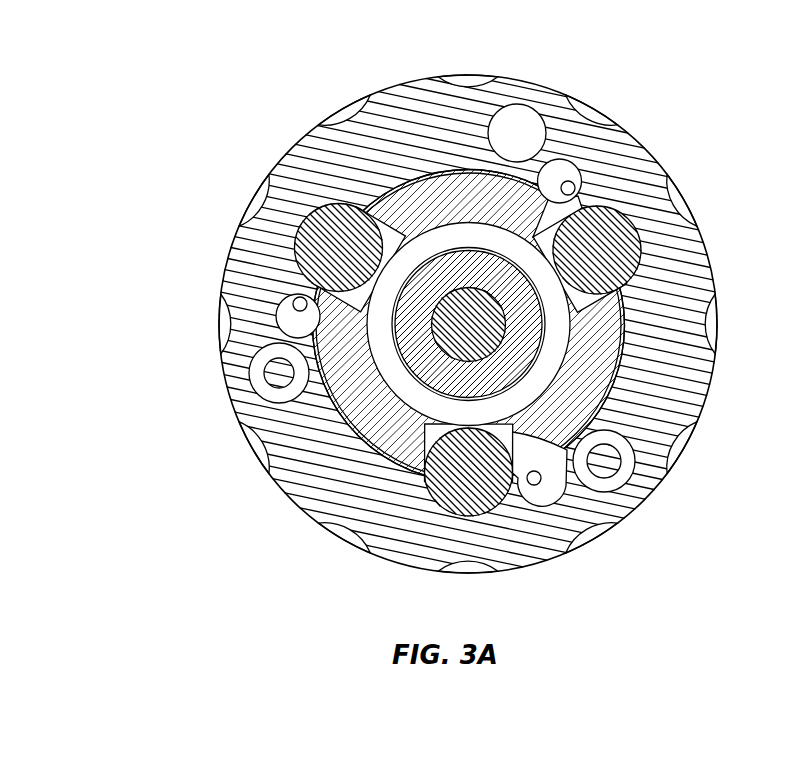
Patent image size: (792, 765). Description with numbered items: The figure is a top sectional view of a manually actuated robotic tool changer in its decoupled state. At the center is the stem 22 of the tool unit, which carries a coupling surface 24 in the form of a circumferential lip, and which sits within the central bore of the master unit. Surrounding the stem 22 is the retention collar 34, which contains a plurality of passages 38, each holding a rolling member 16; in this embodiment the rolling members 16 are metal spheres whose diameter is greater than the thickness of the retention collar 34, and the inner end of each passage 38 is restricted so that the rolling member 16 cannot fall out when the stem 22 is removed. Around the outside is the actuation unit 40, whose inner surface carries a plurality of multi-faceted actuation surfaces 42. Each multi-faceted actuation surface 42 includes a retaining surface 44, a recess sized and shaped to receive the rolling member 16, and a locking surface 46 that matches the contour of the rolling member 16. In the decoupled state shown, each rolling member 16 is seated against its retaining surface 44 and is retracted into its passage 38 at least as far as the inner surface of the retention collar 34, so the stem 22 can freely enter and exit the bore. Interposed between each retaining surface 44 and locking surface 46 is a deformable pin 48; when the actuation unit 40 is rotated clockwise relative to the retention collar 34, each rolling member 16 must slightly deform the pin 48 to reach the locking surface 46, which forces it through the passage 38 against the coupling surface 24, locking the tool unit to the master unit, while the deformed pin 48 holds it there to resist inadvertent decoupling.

The rolling member 16 is at (326, 258).
The stem 22 is at (458, 387).
The coupling surface 24 is at (404, 378).
The retention collar 34 is at (413, 212).
The passage 38 is at (510, 437).
The actuation unit 40 is at (617, 172).
The multi-faceted actuation surface 42 is at (286, 247).
The retaining surface 44 is at (315, 208).
The locking surface 46 is at (309, 347).
The deformable pin 48 is at (293, 302).